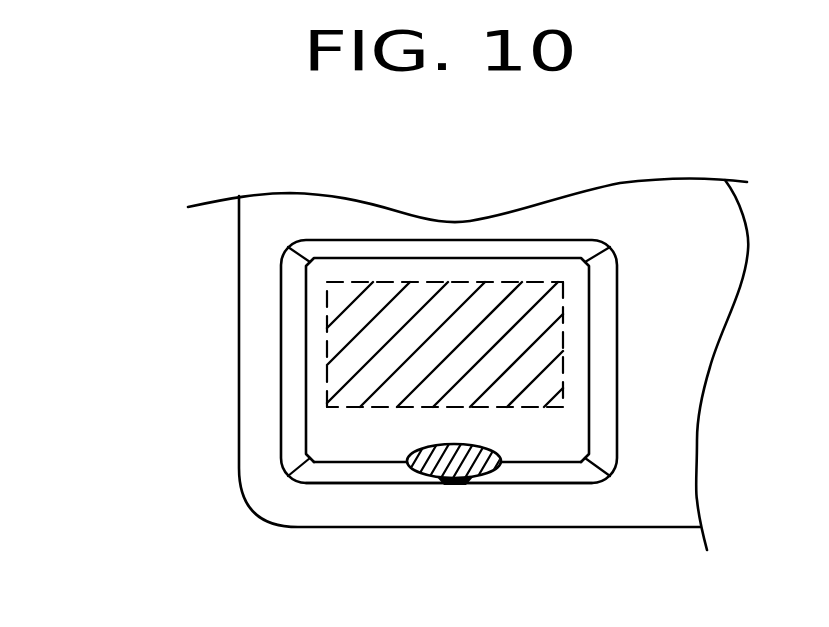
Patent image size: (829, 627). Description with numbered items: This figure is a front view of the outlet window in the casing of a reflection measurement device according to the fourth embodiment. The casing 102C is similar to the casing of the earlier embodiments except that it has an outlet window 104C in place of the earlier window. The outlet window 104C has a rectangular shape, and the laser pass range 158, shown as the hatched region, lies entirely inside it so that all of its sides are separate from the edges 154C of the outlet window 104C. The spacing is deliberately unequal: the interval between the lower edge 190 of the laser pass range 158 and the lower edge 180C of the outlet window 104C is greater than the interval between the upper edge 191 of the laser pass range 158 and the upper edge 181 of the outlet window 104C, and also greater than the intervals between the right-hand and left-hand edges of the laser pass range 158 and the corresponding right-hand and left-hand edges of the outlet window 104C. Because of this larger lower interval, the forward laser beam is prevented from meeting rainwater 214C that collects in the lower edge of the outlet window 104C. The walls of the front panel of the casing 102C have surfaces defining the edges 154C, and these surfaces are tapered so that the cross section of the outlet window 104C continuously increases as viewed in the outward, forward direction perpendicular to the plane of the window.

The casing 102C is at (237, 323).
The outlet window 104C is at (532, 236).
The edges of the outlet window 154C is at (572, 478).
The upper edge of the outlet window 181 is at (437, 258).
The lower edge of the outlet window 180C is at (367, 463).
The upper edge of the laser pass range 191 is at (380, 283).
The lower edge of the laser pass range 190 is at (512, 407).
The laser pass range 158 is at (540, 332).
The rainwater 214C is at (452, 483).